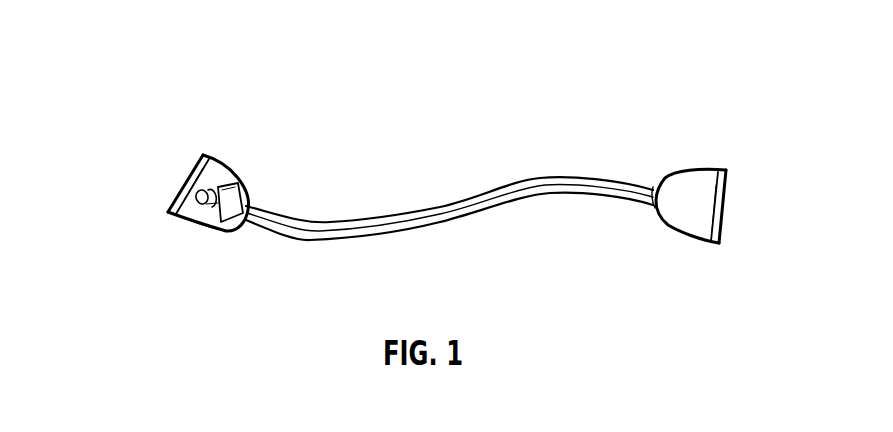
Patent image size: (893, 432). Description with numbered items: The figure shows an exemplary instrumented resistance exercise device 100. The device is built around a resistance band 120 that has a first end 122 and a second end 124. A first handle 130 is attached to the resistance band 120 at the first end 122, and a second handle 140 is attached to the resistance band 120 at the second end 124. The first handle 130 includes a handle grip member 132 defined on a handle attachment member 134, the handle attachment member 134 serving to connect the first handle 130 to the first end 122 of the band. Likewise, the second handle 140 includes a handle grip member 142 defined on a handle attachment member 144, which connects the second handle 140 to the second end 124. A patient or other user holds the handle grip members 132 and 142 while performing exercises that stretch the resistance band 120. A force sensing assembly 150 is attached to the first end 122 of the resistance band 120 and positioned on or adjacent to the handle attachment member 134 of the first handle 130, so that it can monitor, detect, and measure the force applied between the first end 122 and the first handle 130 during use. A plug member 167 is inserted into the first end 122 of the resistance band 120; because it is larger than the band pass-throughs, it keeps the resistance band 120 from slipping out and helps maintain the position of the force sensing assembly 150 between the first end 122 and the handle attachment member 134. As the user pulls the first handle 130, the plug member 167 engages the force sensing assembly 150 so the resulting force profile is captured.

The instrumented resistance exercise device 100 is at (190, 44).
The resistance band 120 is at (443, 206).
The first end 122 is at (172, 212).
The second end 124 is at (657, 188).
The first handle 130 is at (218, 142).
The handle grip member 132 is at (178, 186).
The handle attachment member 134 is at (232, 184).
The second handle 140 is at (713, 158).
The handle grip member 142 is at (727, 207).
The handle attachment member 144 is at (687, 242).
The force sensing assembly 150 is at (228, 224).
The plug member 167 is at (208, 212).